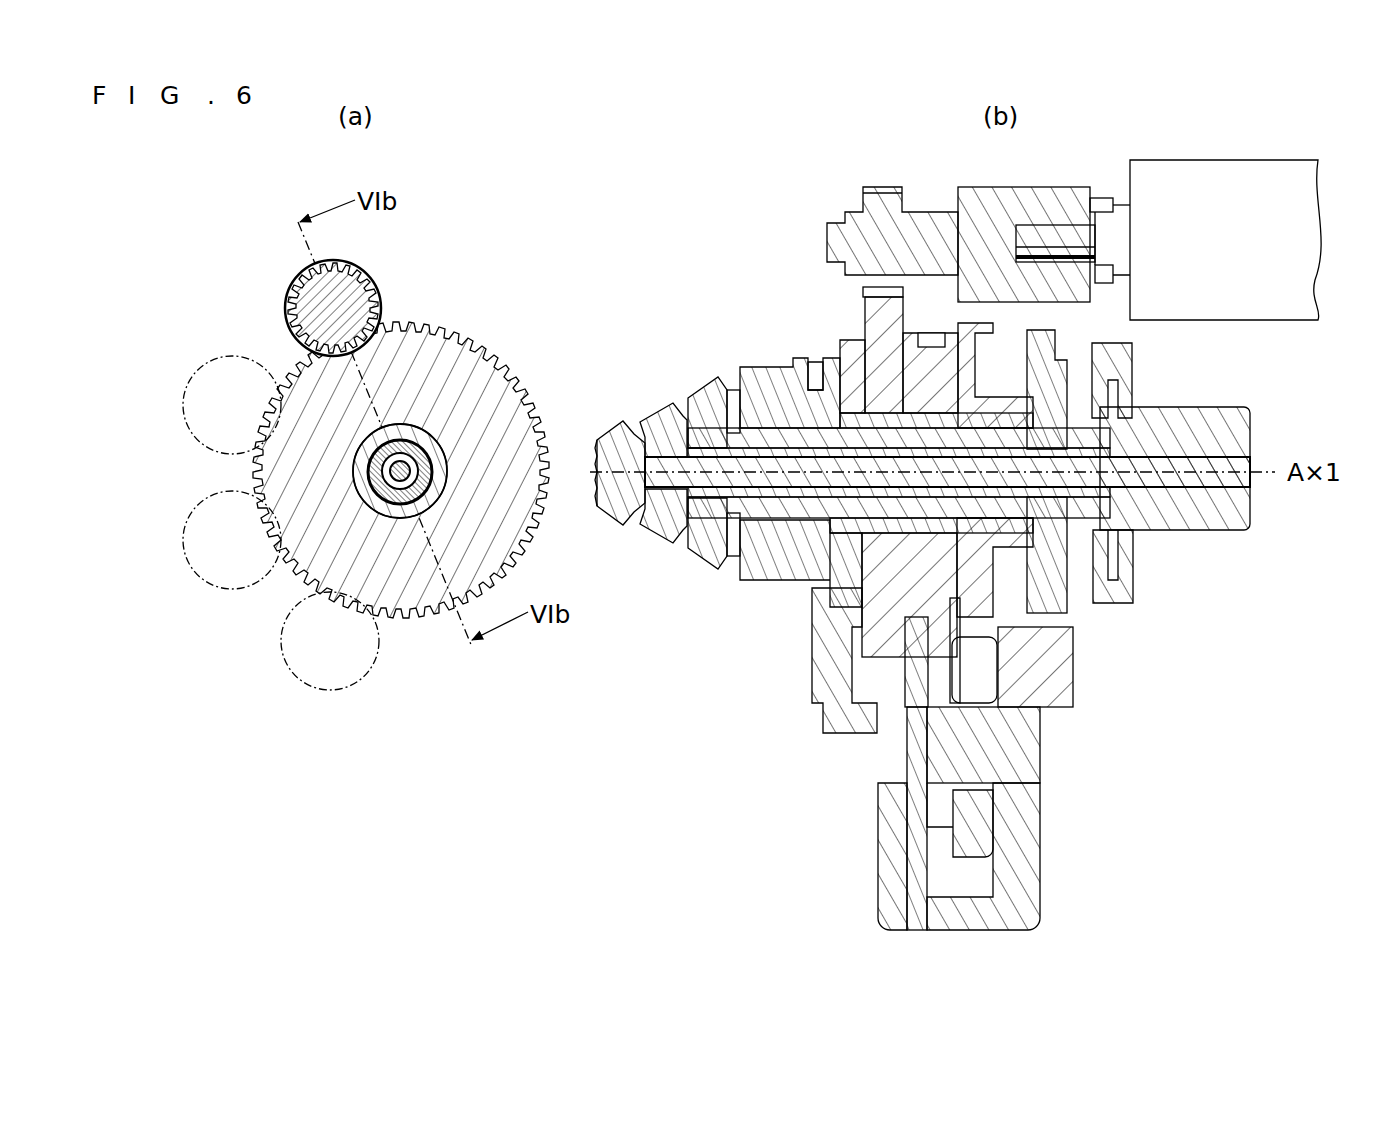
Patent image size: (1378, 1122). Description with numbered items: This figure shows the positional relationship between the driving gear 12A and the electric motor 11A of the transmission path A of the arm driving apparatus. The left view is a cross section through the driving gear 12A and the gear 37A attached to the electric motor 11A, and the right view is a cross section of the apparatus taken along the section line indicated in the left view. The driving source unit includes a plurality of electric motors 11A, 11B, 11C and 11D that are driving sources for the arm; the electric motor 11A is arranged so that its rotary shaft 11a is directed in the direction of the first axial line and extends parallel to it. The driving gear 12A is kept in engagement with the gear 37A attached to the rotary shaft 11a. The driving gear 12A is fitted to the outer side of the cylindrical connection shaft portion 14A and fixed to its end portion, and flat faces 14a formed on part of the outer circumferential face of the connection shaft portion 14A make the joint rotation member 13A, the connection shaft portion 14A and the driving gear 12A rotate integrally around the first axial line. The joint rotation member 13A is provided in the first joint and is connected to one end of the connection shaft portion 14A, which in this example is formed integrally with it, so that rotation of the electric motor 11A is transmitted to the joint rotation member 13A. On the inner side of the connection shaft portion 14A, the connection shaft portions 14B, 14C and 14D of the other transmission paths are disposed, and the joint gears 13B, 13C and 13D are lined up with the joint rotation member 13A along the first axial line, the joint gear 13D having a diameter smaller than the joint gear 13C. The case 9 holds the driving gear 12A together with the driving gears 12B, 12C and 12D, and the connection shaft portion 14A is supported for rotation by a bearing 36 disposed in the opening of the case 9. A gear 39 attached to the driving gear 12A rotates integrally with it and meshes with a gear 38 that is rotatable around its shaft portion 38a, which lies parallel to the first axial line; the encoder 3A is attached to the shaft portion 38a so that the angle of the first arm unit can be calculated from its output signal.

The encoder 3A is at (990, 835).
The case 9 is at (890, 888).
The electric motor 11A is at (1222, 112).
The electric motor 11B is at (213, 356).
The electric motor 11C is at (230, 592).
The electric motor 11D is at (335, 693).
The rotary shaft 11a is at (1050, 237).
The driving gear 12A is at (485, 352).
The driving gear 12B is at (981, 338).
The driving gear 12C is at (1052, 590).
The driving gear 12D is at (1118, 595).
The joint rotation member 13A is at (773, 565).
The joint gear 13B is at (710, 543).
The joint gear 13C is at (657, 547).
The joint gear 13D is at (613, 505).
The connection shaft portion 14A is at (447, 453).
The connection shaft portion 14B is at (430, 485).
The connection shaft portion 14C is at (398, 510).
The connection shaft portion 14D is at (390, 476).
The flat faces 14a is at (412, 430).
The bearing 36 is at (850, 600).
The gear 37A is at (380, 307).
The gear 38 is at (937, 828).
The shaft portion 38a is at (1027, 755).
The gear 39 is at (933, 337).